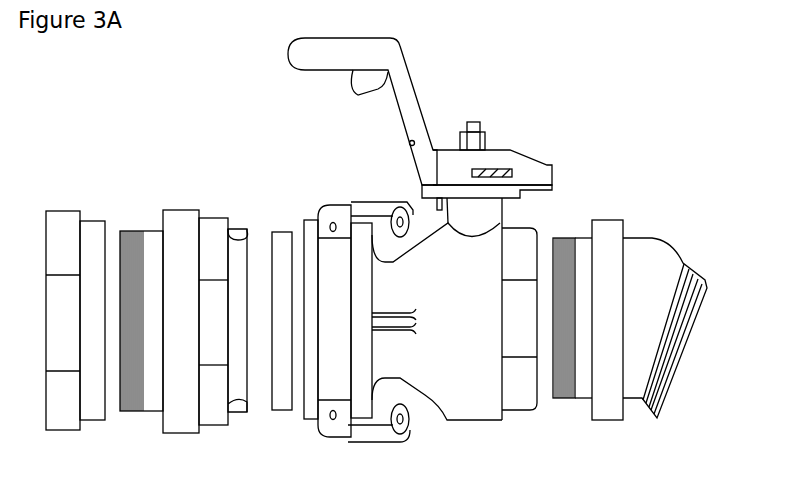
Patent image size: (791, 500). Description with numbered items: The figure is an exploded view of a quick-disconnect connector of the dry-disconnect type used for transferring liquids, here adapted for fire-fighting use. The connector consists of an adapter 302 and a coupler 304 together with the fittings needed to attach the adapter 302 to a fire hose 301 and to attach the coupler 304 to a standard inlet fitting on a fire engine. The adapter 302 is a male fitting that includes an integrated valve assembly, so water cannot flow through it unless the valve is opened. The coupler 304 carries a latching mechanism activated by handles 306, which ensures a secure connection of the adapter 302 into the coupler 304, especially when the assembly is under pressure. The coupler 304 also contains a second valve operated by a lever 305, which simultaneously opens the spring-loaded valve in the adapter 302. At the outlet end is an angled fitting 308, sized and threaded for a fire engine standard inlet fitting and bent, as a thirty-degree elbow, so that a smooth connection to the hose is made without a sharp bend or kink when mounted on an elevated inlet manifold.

The fire hose 301 is at (91, 208).
The adapter 302 is at (242, 208).
The coupler 304 is at (427, 418).
The lever 305 is at (418, 78).
The handles 306 is at (368, 458).
The angled fitting 308 is at (650, 222).